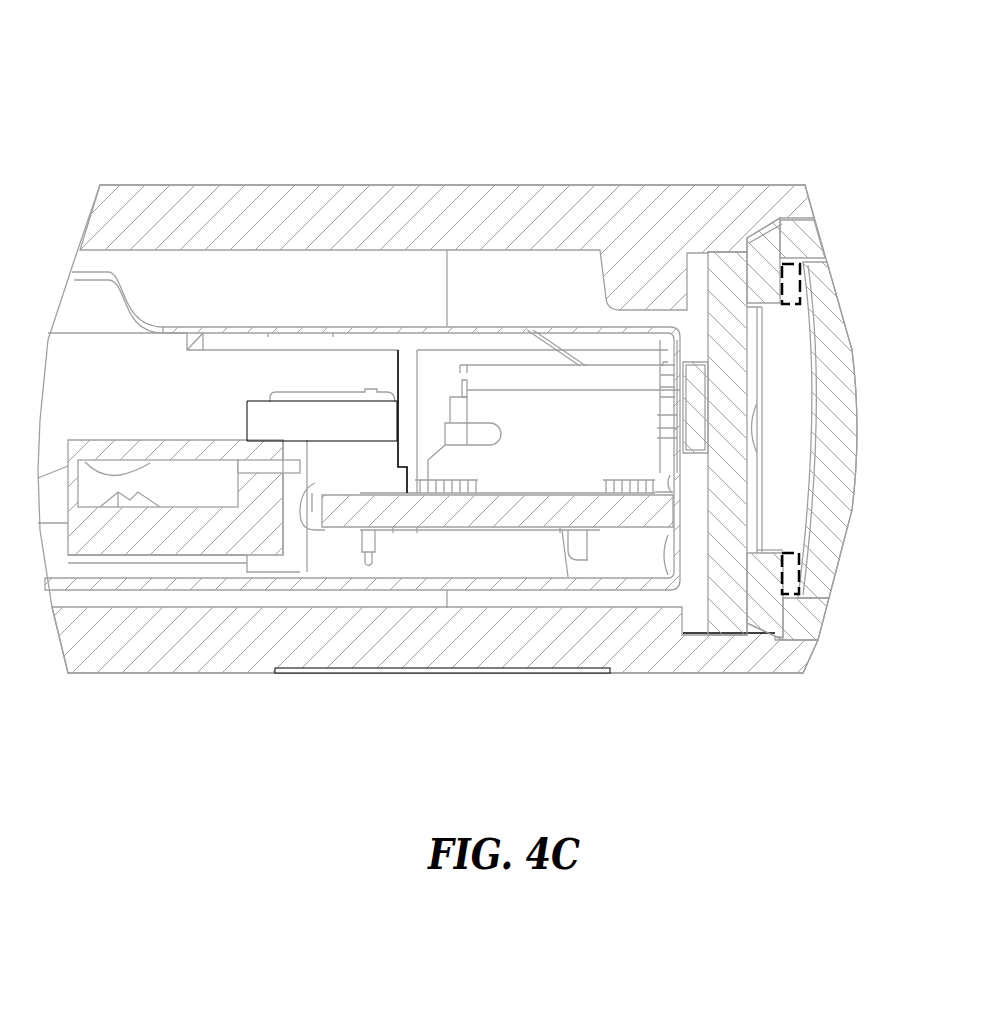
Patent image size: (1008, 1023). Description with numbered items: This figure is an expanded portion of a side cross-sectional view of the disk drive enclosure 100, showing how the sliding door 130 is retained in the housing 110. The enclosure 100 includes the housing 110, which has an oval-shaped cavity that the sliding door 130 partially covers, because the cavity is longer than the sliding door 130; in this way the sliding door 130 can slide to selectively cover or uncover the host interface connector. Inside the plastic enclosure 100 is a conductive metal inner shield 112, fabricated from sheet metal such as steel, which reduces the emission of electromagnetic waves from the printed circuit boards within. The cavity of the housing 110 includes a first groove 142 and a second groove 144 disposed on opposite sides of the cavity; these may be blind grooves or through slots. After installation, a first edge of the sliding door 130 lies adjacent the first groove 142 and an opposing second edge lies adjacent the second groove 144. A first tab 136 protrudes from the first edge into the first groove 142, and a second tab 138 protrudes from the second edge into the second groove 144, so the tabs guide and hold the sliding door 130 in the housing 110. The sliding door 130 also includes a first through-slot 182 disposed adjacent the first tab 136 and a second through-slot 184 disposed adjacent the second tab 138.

The enclosure 100 is at (481, 73).
The housing 110 is at (297, 218).
The conductive metal inner shield 112 is at (132, 302).
The sliding door 130 is at (832, 452).
The first tab 136 is at (762, 252).
The second tab 138 is at (762, 615).
The first groove 142 is at (775, 220).
The second groove 144 is at (773, 635).
The first through-slot 182 is at (797, 283).
The second through-slot 184 is at (788, 574).